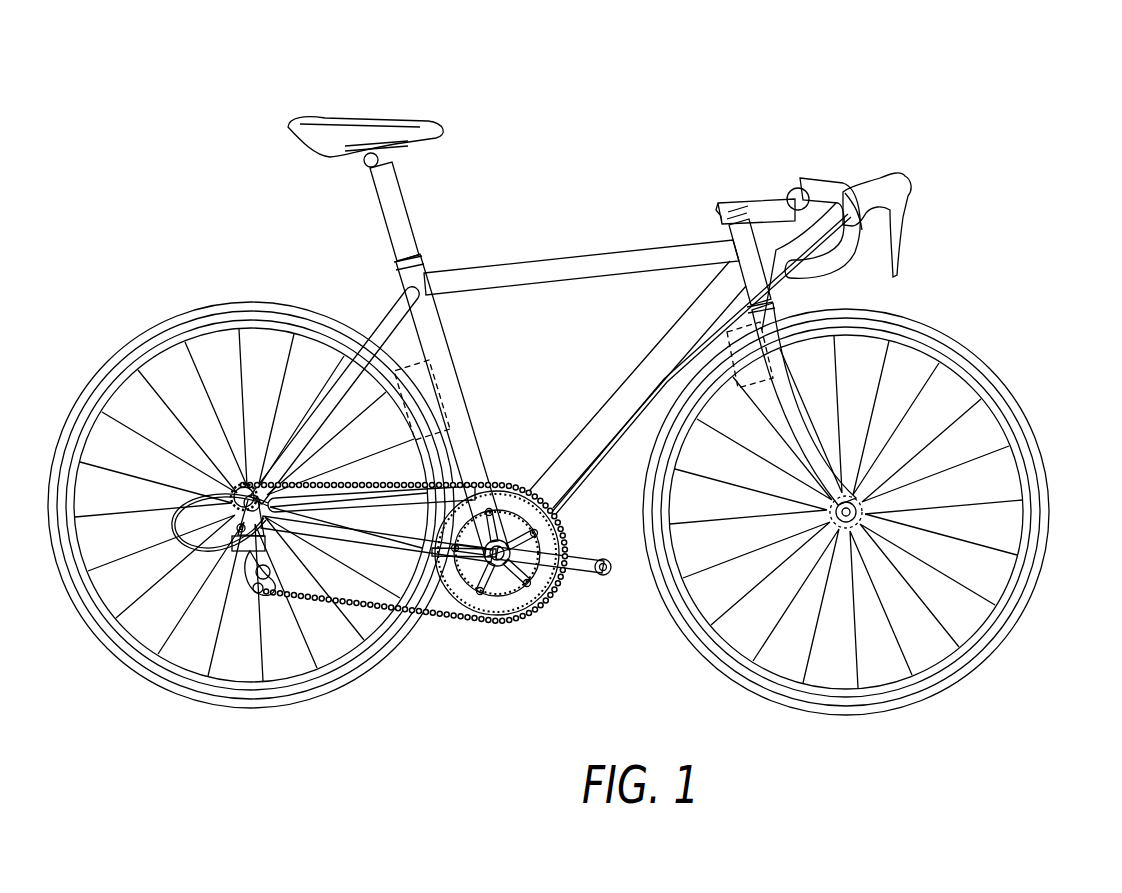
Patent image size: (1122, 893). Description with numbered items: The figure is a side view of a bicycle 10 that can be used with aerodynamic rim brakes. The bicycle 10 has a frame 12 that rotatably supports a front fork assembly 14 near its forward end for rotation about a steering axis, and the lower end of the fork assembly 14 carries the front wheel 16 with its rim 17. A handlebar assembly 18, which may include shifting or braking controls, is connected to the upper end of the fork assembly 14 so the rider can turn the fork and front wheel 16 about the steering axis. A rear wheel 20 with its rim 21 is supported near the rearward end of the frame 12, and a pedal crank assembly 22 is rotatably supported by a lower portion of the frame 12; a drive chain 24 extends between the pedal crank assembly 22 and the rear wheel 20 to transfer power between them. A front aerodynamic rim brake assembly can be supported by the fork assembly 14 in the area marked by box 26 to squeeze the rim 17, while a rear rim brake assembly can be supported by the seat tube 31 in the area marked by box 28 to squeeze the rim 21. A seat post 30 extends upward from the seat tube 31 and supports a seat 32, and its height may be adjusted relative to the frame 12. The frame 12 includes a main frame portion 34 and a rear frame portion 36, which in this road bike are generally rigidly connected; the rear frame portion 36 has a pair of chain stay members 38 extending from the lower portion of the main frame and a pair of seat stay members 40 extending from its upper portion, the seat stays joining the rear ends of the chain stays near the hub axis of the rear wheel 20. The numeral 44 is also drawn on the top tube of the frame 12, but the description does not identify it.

The bicycle 10 is at (613, 133).
The frame 12 is at (565, 248).
The front fork assembly 14 is at (790, 403).
The front wheel 16 is at (962, 330).
The rim 17 is at (1000, 388).
The handlebar assembly 18 is at (842, 176).
The rear wheel 20 is at (188, 307).
The rim 21 is at (268, 315).
The pedal crank assembly 22 is at (595, 577).
The drive chain 24 is at (370, 613).
The box 26 is at (723, 334).
The box 28 is at (440, 372).
The seat post 30 is at (405, 225).
The seat tube 31 is at (430, 325).
The seat 32 is at (368, 117).
The main frame portion 34 is at (600, 283).
The rear frame portion 36 is at (228, 472).
The chain stay members 38 is at (329, 524).
The seat stay members 40 is at (330, 402).
The top tube 44 is at (528, 278).